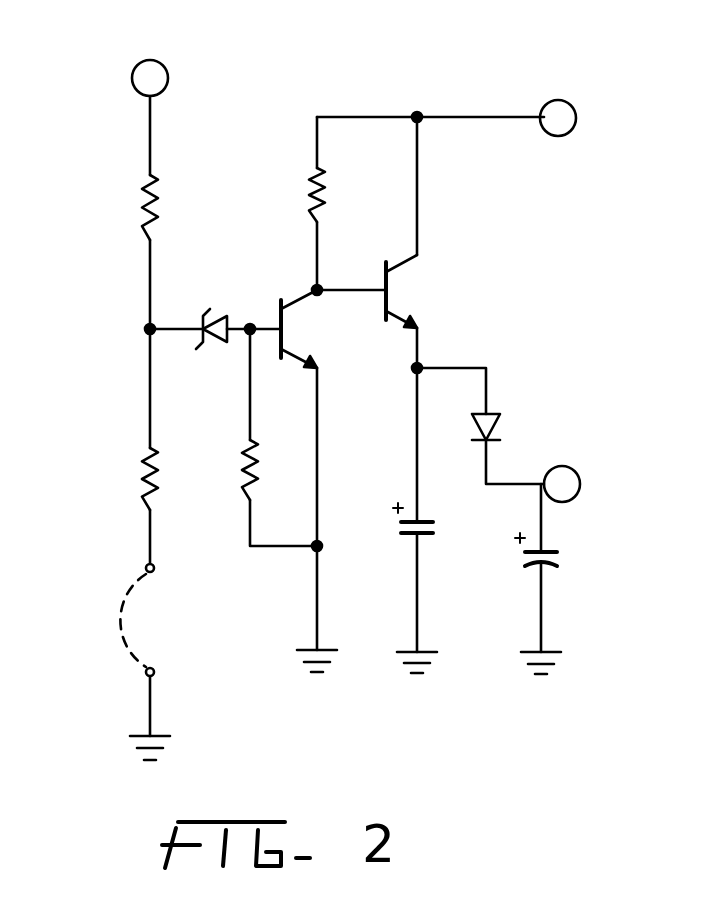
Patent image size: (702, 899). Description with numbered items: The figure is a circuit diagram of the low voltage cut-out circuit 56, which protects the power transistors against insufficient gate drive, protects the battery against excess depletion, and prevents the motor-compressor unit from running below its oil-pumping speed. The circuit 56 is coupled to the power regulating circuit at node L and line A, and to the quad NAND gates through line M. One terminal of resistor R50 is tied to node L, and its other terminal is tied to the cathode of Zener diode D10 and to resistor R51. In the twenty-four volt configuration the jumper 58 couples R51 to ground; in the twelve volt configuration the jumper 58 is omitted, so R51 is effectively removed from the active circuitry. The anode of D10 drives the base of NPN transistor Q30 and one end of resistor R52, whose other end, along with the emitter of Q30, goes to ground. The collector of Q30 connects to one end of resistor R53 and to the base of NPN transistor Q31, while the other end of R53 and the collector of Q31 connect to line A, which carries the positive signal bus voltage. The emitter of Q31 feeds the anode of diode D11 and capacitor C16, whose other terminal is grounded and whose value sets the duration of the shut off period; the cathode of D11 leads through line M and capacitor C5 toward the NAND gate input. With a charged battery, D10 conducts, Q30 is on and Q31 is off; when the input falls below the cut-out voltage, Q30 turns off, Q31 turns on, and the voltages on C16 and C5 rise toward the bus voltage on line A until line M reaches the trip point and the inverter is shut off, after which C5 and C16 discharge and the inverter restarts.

The low voltage cut-out circuit 56 is at (390, 92).
The jumper 58 is at (125, 603).
The node L is at (150, 78).
The line A is at (558, 118).
The line M is at (562, 484).
The resistor R50 is at (170, 207).
The resistor R51 is at (129, 479).
The resistor R52 is at (227, 470).
The resistor R53 is at (336, 195).
The Zener diode D10 is at (210, 314).
The diode D11 is at (507, 427).
The NPN transistor Q30 is at (310, 295).
The NPN transistor Q31 is at (415, 291).
The capacitor C16 is at (433, 522).
The capacitor C5 is at (550, 550).